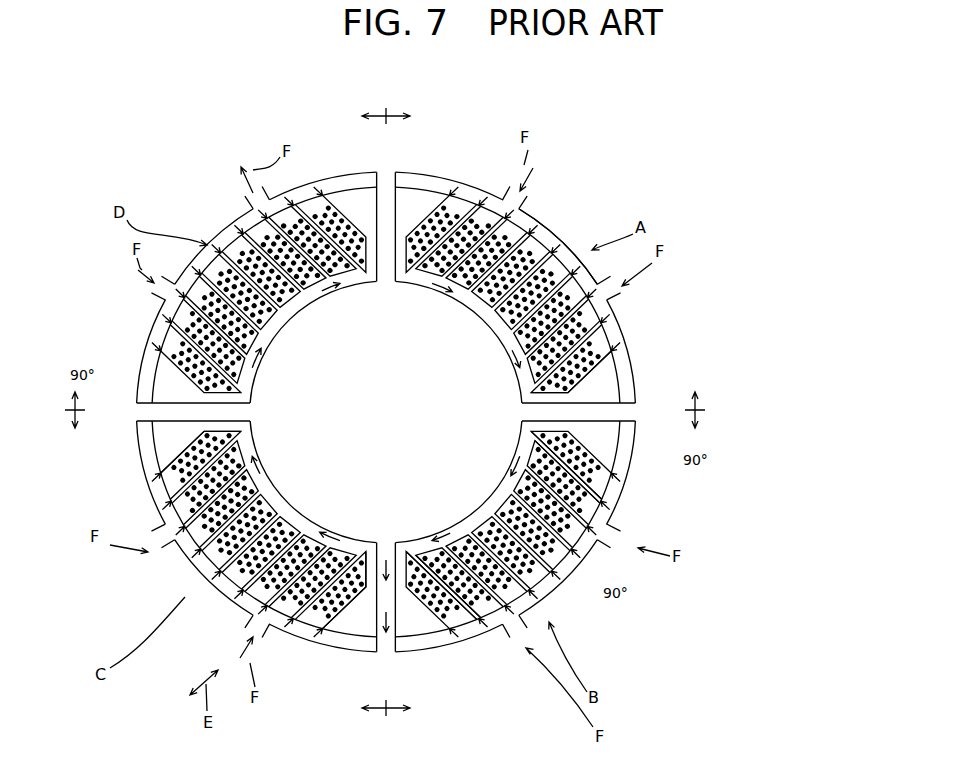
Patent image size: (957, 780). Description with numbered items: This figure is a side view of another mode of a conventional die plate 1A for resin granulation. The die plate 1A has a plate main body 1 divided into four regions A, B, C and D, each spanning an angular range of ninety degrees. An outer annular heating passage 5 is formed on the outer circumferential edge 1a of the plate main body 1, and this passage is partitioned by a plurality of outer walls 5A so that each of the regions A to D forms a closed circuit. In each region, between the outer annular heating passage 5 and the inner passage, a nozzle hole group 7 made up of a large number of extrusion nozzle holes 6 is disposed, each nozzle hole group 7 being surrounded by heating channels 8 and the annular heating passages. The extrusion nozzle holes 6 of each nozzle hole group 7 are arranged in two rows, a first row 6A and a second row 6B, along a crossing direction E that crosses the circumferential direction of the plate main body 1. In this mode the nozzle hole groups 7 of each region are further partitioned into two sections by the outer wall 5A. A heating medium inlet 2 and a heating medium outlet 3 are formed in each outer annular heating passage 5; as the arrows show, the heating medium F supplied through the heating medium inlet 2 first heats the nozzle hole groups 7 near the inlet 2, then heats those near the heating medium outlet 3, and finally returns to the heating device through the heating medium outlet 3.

The plate main body 1 is at (386, 399).
The die plate 1A is at (386, 388).
The circumferential edge 1a is at (556, 237).
The heating medium inlet 2 is at (523, 198).
The heating medium outlet 3 is at (631, 300).
The outer annular heating passage 5 is at (388, 383).
The outer wall 5A is at (214, 243).
The extrusion nozzle hole 6 is at (589, 313).
The first row 6A is at (162, 470).
The second row 6B is at (165, 490).
The nozzle hole group 7 is at (603, 473).
The heating channel 8 is at (447, 627).